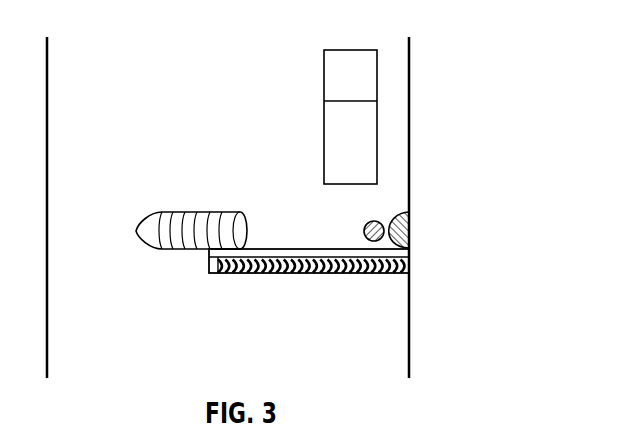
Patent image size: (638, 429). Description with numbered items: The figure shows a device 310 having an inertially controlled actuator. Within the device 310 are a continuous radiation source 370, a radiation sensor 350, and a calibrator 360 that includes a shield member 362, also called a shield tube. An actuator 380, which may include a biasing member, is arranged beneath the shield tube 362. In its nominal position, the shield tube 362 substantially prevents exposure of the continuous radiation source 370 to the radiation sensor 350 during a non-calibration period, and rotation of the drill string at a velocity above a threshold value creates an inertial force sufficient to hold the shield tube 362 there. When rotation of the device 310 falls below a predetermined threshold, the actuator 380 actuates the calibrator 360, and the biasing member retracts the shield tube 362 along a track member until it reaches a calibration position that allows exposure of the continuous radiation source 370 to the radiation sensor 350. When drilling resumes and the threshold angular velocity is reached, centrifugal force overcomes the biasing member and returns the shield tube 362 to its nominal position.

The device 310 is at (455, 38).
The radiation sensor 350 is at (323, 146).
The calibrator 360 is at (240, 191).
The shield member 362 is at (141, 237).
The continuous radiation source 370 is at (366, 223).
The actuator 380 is at (407, 299).